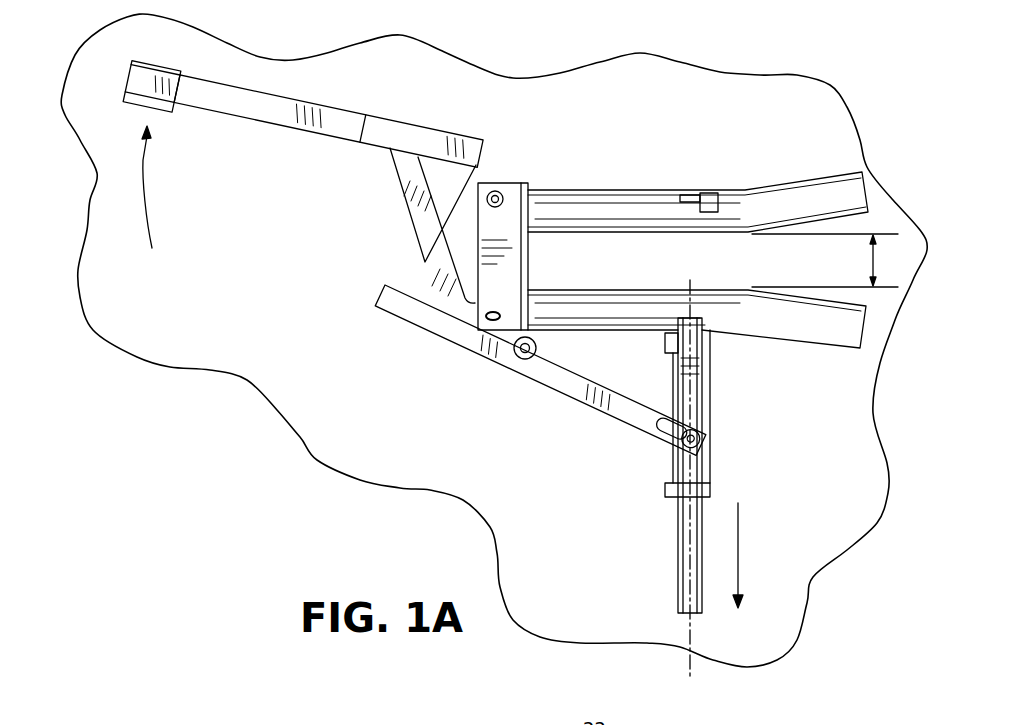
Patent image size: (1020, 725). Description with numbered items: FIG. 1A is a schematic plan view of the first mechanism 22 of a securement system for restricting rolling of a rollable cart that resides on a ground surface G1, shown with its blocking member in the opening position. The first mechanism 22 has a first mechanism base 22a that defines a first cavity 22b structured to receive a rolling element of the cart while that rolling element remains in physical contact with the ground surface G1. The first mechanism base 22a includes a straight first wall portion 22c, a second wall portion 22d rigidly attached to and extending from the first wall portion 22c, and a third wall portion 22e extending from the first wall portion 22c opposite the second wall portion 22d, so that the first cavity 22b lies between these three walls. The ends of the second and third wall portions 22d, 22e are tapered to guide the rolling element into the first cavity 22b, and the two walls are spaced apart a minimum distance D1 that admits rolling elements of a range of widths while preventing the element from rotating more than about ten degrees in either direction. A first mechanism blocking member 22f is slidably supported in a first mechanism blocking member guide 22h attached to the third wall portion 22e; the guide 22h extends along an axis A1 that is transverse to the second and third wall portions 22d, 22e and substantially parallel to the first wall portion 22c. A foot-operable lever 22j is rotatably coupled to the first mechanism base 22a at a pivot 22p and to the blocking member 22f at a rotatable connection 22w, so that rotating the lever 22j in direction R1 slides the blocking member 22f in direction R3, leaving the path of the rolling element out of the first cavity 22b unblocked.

The ground surface G1 is at (170, 54).
The first mechanism 22 is at (862, 489).
The first mechanism base 22a is at (575, 162).
The first cavity 22b is at (632, 254).
The first wall portion 22c is at (508, 217).
The second wall portion 22d is at (612, 213).
The third wall portion 22e is at (757, 307).
The first mechanism blocking member 22f is at (685, 573).
The first mechanism blocking member guide 22h is at (667, 470).
The lever 22j is at (410, 168).
The pivot 22p is at (523, 352).
The rotatable connection 22w is at (672, 426).
The axis A1 is at (690, 633).
The minimum distance D1 is at (825, 260).
The direction R1 is at (156, 187).
The direction R3 is at (751, 555).